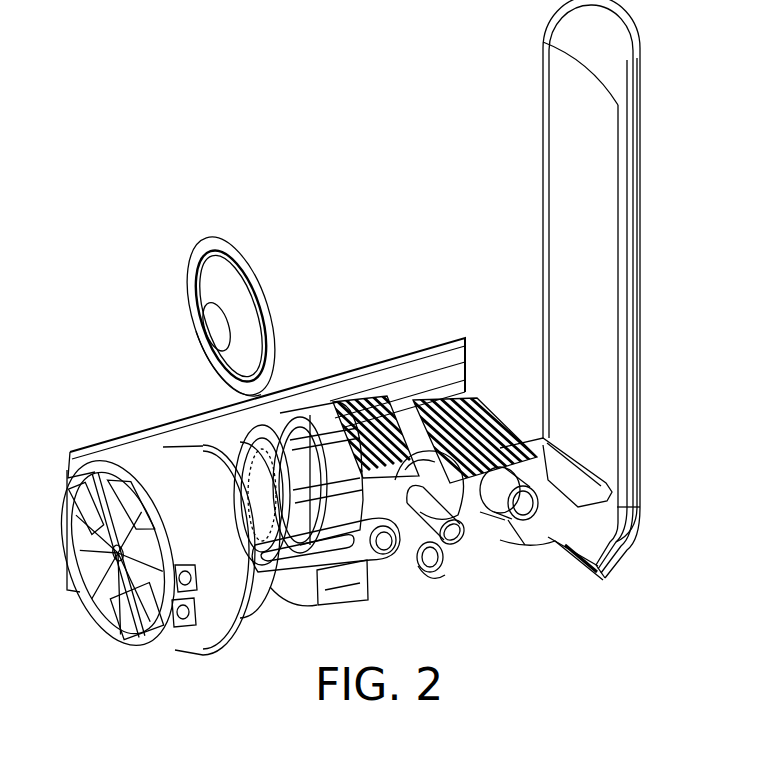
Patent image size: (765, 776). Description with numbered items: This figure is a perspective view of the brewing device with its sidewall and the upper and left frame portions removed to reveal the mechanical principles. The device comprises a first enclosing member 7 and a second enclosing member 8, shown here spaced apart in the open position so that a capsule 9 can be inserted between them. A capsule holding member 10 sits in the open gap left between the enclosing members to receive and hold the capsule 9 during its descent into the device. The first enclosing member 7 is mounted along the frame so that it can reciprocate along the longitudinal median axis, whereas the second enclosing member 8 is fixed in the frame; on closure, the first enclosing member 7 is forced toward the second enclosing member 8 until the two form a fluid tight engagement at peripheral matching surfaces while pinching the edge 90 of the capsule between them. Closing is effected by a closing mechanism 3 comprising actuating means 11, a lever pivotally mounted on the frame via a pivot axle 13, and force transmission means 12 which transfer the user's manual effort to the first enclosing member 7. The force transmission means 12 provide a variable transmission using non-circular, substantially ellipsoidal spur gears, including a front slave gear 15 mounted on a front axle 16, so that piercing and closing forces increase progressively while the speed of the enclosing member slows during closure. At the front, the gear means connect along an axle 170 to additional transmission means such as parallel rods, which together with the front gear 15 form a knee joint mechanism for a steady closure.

The closing mechanism 3 is at (636, 578).
The first enclosing member 7 is at (342, 598).
The second enclosing member 8 is at (219, 593).
The capsule 9 is at (127, 236).
The capsule holding member 10 is at (262, 618).
The actuating means 11 is at (642, 224).
The force transmission means 12 is at (436, 578).
The pivot axle 13 is at (504, 500).
The front slave gear 15 is at (455, 513).
The front axle 16 is at (451, 538).
The edge of the capsule 90 is at (210, 238).
The axle 170 is at (428, 568).